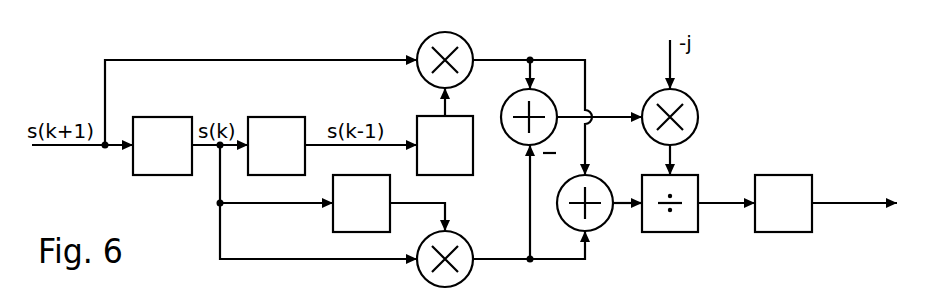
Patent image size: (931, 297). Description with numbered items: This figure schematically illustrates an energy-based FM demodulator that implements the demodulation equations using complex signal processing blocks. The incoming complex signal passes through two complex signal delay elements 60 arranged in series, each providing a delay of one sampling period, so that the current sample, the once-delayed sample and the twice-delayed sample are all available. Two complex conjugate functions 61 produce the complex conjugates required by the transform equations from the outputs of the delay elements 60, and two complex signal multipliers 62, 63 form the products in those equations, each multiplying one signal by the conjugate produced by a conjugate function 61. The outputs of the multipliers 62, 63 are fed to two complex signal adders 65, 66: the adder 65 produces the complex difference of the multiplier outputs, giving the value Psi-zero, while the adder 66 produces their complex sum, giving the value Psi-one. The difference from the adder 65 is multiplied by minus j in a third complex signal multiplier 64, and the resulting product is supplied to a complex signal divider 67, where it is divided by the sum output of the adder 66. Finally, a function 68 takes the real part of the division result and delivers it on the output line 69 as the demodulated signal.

The complex signal delay element 60 is at (162, 125).
The complex conjugate function 61 is at (425, 123).
The complex signal multiplier 62 is at (466, 52).
The complex signal multiplier 63 is at (466, 250).
The complex signal multiplier 64 is at (690, 110).
The complex signal adder 65 is at (513, 137).
The complex signal adder 66 is at (600, 220).
The complex signal divider 67 is at (688, 180).
The real part function 68 is at (785, 186).
The output line 69 is at (858, 201).